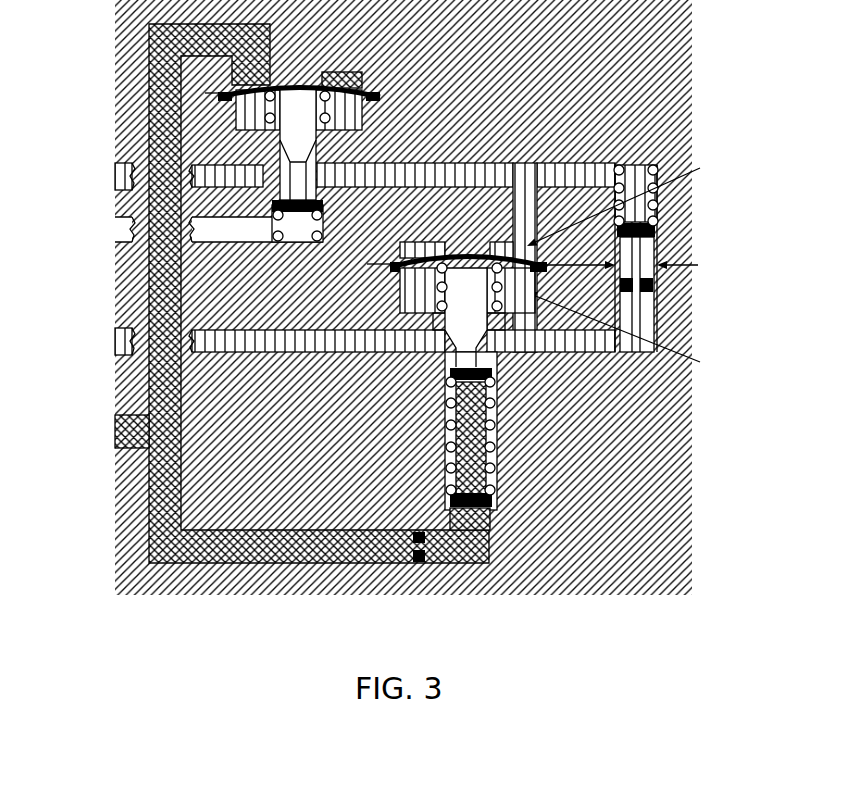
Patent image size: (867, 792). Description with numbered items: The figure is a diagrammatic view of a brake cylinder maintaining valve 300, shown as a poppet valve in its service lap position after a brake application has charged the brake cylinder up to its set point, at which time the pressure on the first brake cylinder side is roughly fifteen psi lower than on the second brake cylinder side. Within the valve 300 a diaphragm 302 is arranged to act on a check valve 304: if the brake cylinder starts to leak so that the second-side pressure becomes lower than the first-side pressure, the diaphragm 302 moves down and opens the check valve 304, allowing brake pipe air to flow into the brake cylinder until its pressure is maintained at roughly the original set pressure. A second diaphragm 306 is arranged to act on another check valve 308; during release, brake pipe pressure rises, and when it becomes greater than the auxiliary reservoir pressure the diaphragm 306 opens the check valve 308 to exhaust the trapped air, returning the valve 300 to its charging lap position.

The brake cylinder maintaining valve 300 is at (70, 50).
The diaphragm 302 is at (390, 266).
The check valve 304 is at (445, 372).
The diaphragm 306 is at (380, 95).
The check valve 308 is at (323, 205).